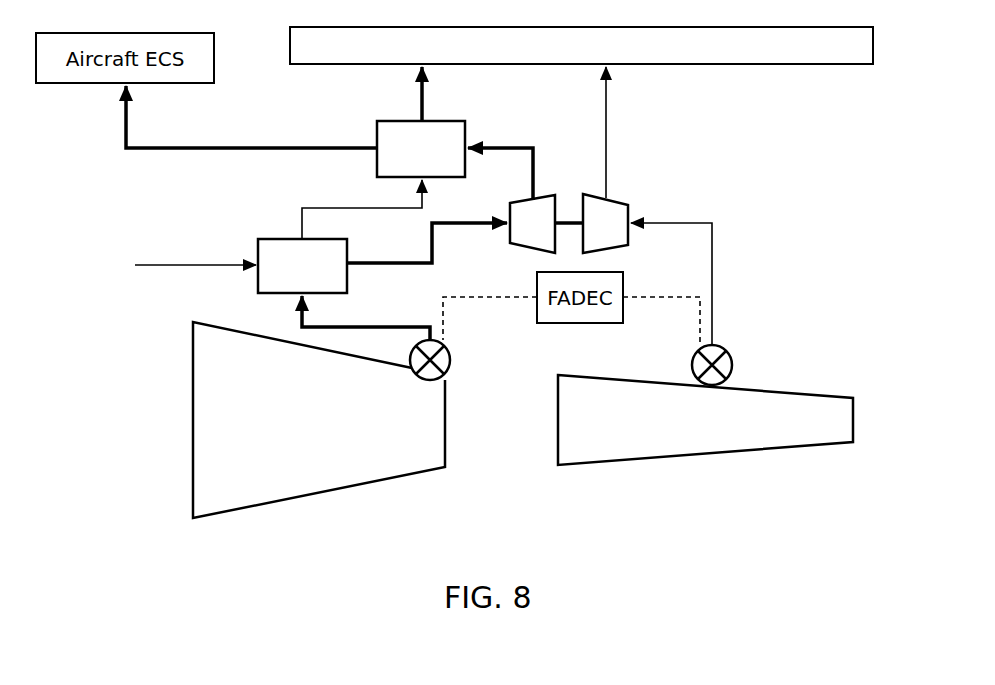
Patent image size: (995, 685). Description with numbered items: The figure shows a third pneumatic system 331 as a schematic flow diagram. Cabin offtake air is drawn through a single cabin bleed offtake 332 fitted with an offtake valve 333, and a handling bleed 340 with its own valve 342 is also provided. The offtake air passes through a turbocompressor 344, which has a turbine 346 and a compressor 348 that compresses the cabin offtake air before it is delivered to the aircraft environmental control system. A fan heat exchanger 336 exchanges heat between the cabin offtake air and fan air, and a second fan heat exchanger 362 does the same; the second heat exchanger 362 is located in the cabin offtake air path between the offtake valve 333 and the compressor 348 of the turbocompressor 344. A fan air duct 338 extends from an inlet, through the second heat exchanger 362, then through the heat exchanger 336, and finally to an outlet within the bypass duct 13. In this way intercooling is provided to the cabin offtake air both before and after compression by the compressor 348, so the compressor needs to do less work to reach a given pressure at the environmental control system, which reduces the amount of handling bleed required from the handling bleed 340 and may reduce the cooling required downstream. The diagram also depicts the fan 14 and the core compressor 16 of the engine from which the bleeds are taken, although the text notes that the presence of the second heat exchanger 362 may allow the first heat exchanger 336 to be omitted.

The bypass duct 13 is at (716, 57).
The fan 14 is at (313, 495).
The core engine compressor 16 is at (690, 457).
The third pneumatic system 331 is at (494, 478).
The cabin bleed offtake 332 is at (406, 390).
The offtake valve 333 is at (450, 360).
The fan heat exchanger 336 is at (377, 132).
The fan air duct 338 is at (322, 207).
The handling bleed 340 is at (732, 276).
The valve 342 is at (732, 364).
The turbocompressor 344 is at (572, 168).
The turbine 346 is at (630, 208).
The compressor 348 is at (515, 247).
The second fan heat exchanger 362 is at (270, 239).